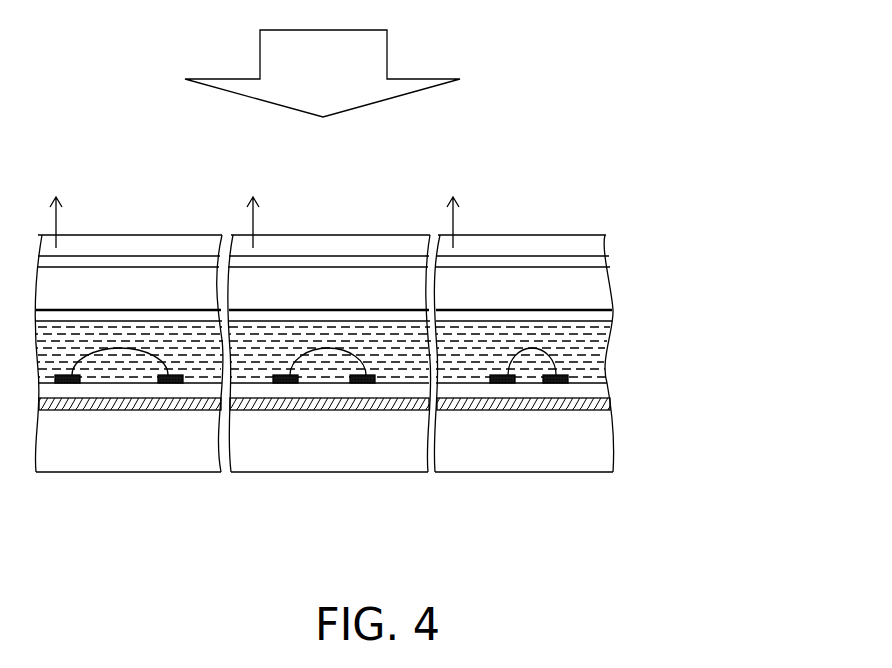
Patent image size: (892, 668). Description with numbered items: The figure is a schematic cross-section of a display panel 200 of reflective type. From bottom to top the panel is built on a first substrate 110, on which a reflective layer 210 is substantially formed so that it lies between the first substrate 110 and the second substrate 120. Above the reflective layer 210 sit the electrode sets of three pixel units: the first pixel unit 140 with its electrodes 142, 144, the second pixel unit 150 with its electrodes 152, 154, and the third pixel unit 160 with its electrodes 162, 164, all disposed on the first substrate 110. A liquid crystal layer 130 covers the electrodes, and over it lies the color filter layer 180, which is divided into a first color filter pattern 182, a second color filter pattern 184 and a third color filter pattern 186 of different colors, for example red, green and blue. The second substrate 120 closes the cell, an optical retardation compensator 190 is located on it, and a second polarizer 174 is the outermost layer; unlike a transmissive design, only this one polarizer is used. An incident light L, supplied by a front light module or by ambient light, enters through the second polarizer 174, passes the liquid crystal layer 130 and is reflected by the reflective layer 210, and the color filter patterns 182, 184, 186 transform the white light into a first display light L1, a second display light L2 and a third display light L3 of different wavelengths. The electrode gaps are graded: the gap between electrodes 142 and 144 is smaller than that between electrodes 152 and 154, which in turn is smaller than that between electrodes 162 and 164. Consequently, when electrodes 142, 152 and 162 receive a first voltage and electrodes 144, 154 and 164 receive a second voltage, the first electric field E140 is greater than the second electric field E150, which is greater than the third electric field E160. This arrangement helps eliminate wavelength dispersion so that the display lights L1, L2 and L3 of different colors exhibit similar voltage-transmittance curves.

The display panel 200 is at (720, 567).
The first substrate 110 is at (585, 448).
The reflective layer 210 is at (603, 405).
The liquid crystal layer 130 is at (585, 338).
The color filter layer 180 is at (611, 310).
The first color filter pattern 182 is at (583, 317).
The second color filter pattern 184 is at (398, 314).
The third color filter pattern 186 is at (195, 314).
The second substrate 120 is at (602, 288).
The optical retardation compensator 190 is at (600, 262).
The second polarizer 174 is at (602, 247).
The first pixel unit 140 is at (567, 186).
The electrode 142 is at (497, 374).
The electrode 144 is at (556, 374).
The second pixel unit 150 is at (370, 186).
The electrode 152 is at (278, 374).
The electrode 154 is at (368, 374).
The third pixel unit 160 is at (170, 186).
The electrode 162 is at (62, 374).
The electrode 164 is at (172, 374).
The first electric field E140 is at (538, 353).
The second electric field E150 is at (332, 350).
The third electric field E160 is at (140, 352).
The incident light L is at (366, 50).
The first display light L1 is at (450, 216).
The second display light L2 is at (250, 216).
The third display light L3 is at (53, 216).